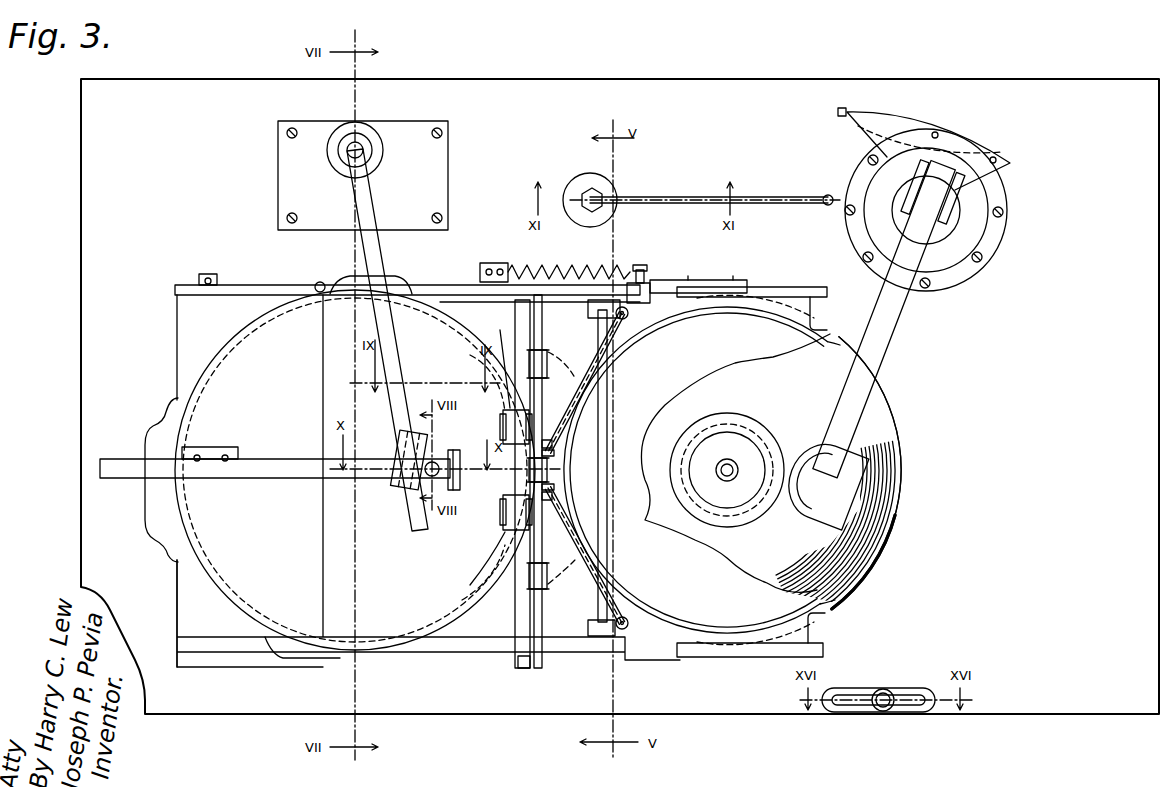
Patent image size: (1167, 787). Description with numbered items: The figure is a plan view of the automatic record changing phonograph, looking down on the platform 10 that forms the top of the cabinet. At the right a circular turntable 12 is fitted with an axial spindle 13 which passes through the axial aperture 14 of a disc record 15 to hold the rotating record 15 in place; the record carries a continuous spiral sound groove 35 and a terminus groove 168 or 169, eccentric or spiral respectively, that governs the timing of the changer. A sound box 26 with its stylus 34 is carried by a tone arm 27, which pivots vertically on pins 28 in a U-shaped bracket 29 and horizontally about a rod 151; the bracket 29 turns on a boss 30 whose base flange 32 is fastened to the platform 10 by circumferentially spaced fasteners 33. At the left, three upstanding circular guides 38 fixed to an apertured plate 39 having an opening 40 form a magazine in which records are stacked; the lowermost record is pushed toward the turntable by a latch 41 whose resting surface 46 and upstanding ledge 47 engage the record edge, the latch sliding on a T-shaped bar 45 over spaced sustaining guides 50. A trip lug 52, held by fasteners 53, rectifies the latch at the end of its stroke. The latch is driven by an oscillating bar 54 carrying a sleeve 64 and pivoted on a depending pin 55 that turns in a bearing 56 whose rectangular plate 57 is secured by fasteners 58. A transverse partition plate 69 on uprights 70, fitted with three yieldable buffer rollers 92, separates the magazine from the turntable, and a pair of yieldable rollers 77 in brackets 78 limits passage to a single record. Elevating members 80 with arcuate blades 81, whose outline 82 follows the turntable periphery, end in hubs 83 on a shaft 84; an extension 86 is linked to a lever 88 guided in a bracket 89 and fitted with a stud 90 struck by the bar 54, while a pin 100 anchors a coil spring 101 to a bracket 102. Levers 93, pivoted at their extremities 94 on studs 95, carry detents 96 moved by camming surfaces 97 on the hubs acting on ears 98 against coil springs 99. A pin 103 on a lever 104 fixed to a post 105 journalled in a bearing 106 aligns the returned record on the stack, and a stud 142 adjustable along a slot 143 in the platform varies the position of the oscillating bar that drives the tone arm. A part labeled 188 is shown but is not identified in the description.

The platform 10 is at (1005, 715).
The turntable 12 is at (870, 600).
The spindle 13 is at (732, 464).
The axial aperture 14 is at (728, 464).
The record 15 is at (880, 415).
The sound box 26 is at (822, 500).
The tone arm 27 is at (905, 333).
The pins 28 is at (912, 160).
The U-shaped bracket 29 is at (954, 228).
The boss 30 is at (860, 192).
The base flange 32 is at (975, 215).
The fasteners 33 is at (868, 165).
The stylus 34 is at (900, 522).
The spiral sound groove 35 is at (895, 482).
The guides 38 is at (165, 418).
The plate 39 is at (190, 590).
The opening 40 is at (228, 338).
The record edge engaging latch 41 is at (505, 420).
The bar 45 is at (302, 480).
The resting surface 46 is at (460, 482).
The upstanding ledge 47 is at (500, 515).
The record sustaining guides 50 is at (250, 300).
The trip mechanism 52 is at (200, 452).
The fasteners 53 is at (225, 462).
The oscillating bar 54 is at (374, 207).
The depending pin 55 is at (362, 140).
The bearing 56 is at (392, 135).
The plate 57 is at (430, 150).
The fasteners 58 is at (455, 128).
The slidable sleeve 64 is at (412, 480).
The transverse plate 69 is at (526, 640).
The uprights 70 is at (523, 670).
The rollers 77 is at (503, 380).
The brackets 78 is at (490, 560).
The elevating members 80 is at (755, 287).
The blades 81 is at (822, 313).
The arcuate outline 82 is at (790, 300).
The hub 83 is at (590, 308).
The shaft 84 is at (609, 345).
The extension 86 is at (660, 282).
The lever 88 is at (458, 300).
The bracket 89 is at (202, 272).
The stud 90 is at (321, 281).
The edge buffer rollers 92 is at (548, 470).
The levers 93 is at (553, 442).
The extremities 94 is at (629, 318).
The studs 95 is at (672, 322).
The detents 96 is at (555, 453).
The camming surfaces 97 is at (592, 332).
The ears 98 is at (634, 282).
The coil springs 99 is at (580, 380).
The pin 100 is at (650, 280).
The coil spring 101 is at (585, 264).
The bracket 102 is at (505, 265).
The edge engaging pin 103 is at (815, 203).
The lever 104 is at (710, 197).
The post 105 is at (602, 192).
The bearing 106 is at (604, 200).
The stud 142 is at (890, 690).
The slot 143 is at (920, 695).
The rod 151 is at (1005, 160).
The terminus groove 168 is at (800, 455).
The terminus groove 169 is at (735, 525).
The cover plate 188 is at (990, 152).